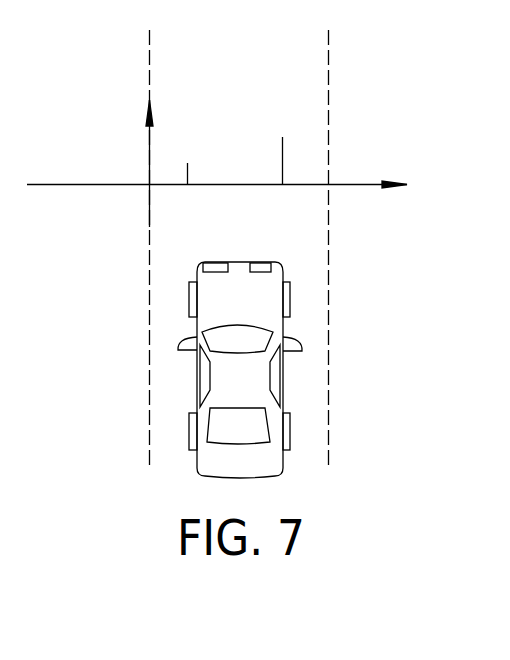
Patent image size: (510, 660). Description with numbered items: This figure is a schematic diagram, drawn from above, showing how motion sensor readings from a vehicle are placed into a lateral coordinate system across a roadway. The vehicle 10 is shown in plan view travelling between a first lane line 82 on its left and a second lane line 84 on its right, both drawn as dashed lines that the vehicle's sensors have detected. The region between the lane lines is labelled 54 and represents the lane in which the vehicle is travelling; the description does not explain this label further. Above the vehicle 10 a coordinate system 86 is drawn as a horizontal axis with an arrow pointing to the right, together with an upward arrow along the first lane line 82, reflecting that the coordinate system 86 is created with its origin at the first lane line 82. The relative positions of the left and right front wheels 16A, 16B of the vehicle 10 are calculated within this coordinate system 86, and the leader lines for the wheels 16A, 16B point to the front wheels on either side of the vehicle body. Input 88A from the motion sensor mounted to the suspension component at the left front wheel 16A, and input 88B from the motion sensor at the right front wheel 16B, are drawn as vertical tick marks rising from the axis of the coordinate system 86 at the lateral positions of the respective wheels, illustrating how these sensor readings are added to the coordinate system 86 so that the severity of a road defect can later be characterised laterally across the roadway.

The vehicle 10 is at (252, 388).
The left front wheel 16A is at (190, 300).
The right front wheel 16B is at (290, 298).
The lane 54 is at (252, 92).
The first lane line 82 is at (148, 347).
The second lane line 84 is at (330, 336).
The coordinate system 86 is at (106, 185).
The input from motion sensor at left front wheel 88A is at (187, 175).
The input from motion sensor at right front wheel 88B is at (283, 162).